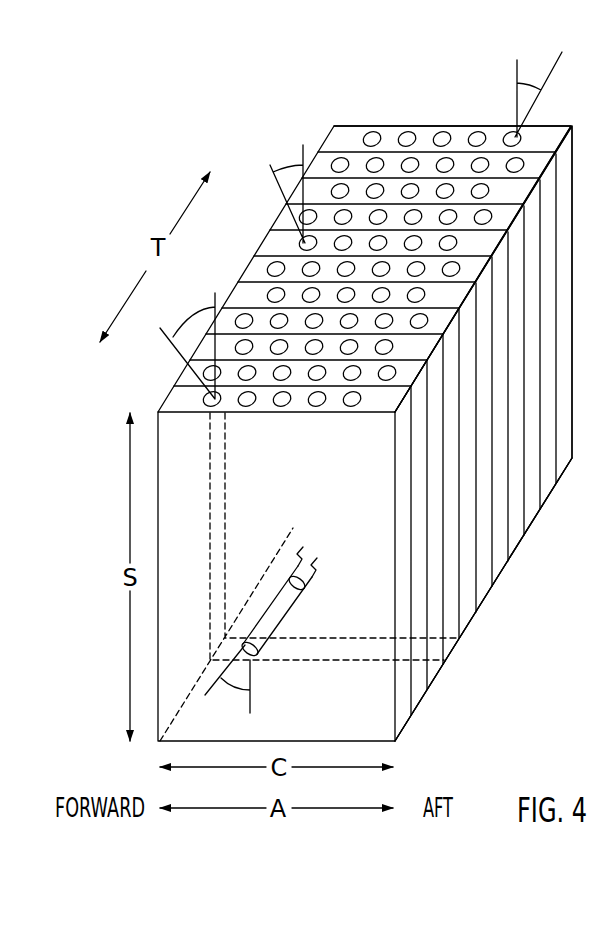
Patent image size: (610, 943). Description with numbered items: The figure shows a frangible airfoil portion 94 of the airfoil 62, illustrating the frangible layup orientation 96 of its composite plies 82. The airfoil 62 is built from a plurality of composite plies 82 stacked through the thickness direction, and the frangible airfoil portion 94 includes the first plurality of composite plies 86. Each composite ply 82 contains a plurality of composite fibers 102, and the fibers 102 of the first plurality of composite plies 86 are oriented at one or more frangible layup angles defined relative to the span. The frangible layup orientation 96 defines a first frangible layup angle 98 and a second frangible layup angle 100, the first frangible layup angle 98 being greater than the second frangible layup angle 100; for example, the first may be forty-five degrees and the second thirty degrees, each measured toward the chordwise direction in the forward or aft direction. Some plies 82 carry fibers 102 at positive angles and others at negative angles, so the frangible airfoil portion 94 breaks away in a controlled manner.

The airfoil 62 is at (142, 157).
The composite plies 82 is at (405, 720).
The first plurality of composite plies 86 is at (504, 669).
The frangible airfoil portion 94 is at (247, 108).
The frangible layup orientation 96 is at (343, 90).
The first frangible layup angle 98 is at (180, 328).
The second frangible layup angle 100 is at (546, 86).
The composite fibers 102 is at (248, 413).